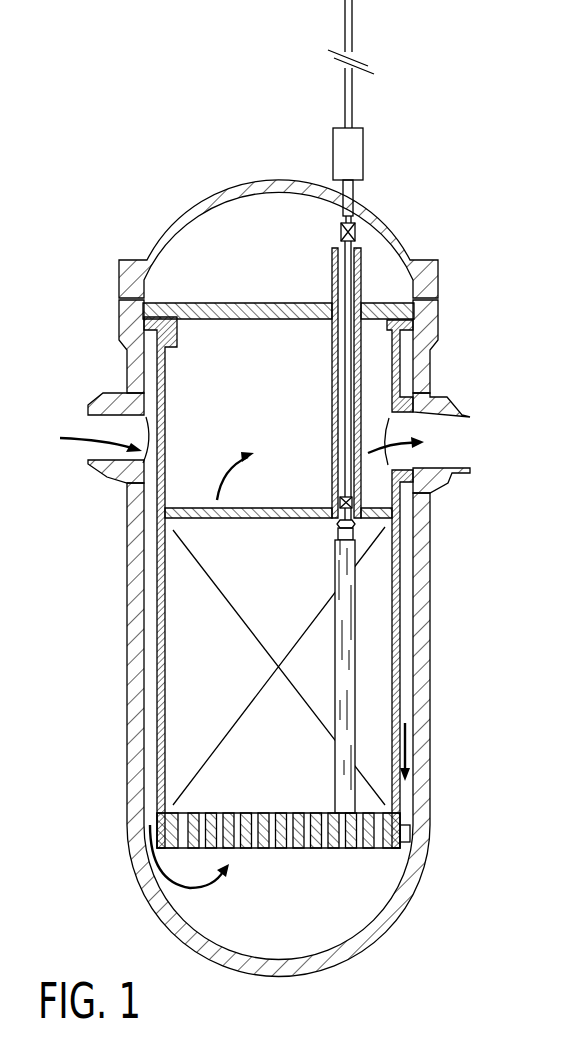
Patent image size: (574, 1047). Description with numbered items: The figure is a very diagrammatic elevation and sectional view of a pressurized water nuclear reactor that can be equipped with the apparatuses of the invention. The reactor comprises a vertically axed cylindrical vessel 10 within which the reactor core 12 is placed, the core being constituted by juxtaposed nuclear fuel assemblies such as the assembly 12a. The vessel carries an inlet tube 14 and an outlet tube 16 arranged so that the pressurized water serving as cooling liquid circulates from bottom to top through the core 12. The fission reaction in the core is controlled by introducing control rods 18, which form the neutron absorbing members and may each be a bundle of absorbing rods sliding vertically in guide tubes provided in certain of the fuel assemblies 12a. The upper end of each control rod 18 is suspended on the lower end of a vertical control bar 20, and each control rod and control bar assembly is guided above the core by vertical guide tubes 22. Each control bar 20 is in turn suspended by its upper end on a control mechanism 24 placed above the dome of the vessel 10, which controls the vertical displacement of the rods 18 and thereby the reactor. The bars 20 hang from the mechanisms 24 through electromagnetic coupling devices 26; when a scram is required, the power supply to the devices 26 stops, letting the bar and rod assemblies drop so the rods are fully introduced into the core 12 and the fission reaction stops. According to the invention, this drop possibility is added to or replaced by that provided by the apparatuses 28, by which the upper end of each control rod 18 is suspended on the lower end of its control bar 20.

The cylindrical vessel 10 is at (420, 775).
The reactor core 12 is at (190, 663).
The nuclear fuel assembly 12a is at (343, 805).
The inlet tube 14 is at (88, 464).
The outlet tube 16 is at (462, 420).
The control rod 18 is at (355, 534).
The control bar 20 is at (348, 285).
The vertical guide tube 22 is at (332, 382).
The control mechanism 24 is at (353, 143).
The electromagnetic coupling device 26 is at (355, 233).
The apparatus 28 is at (357, 500).